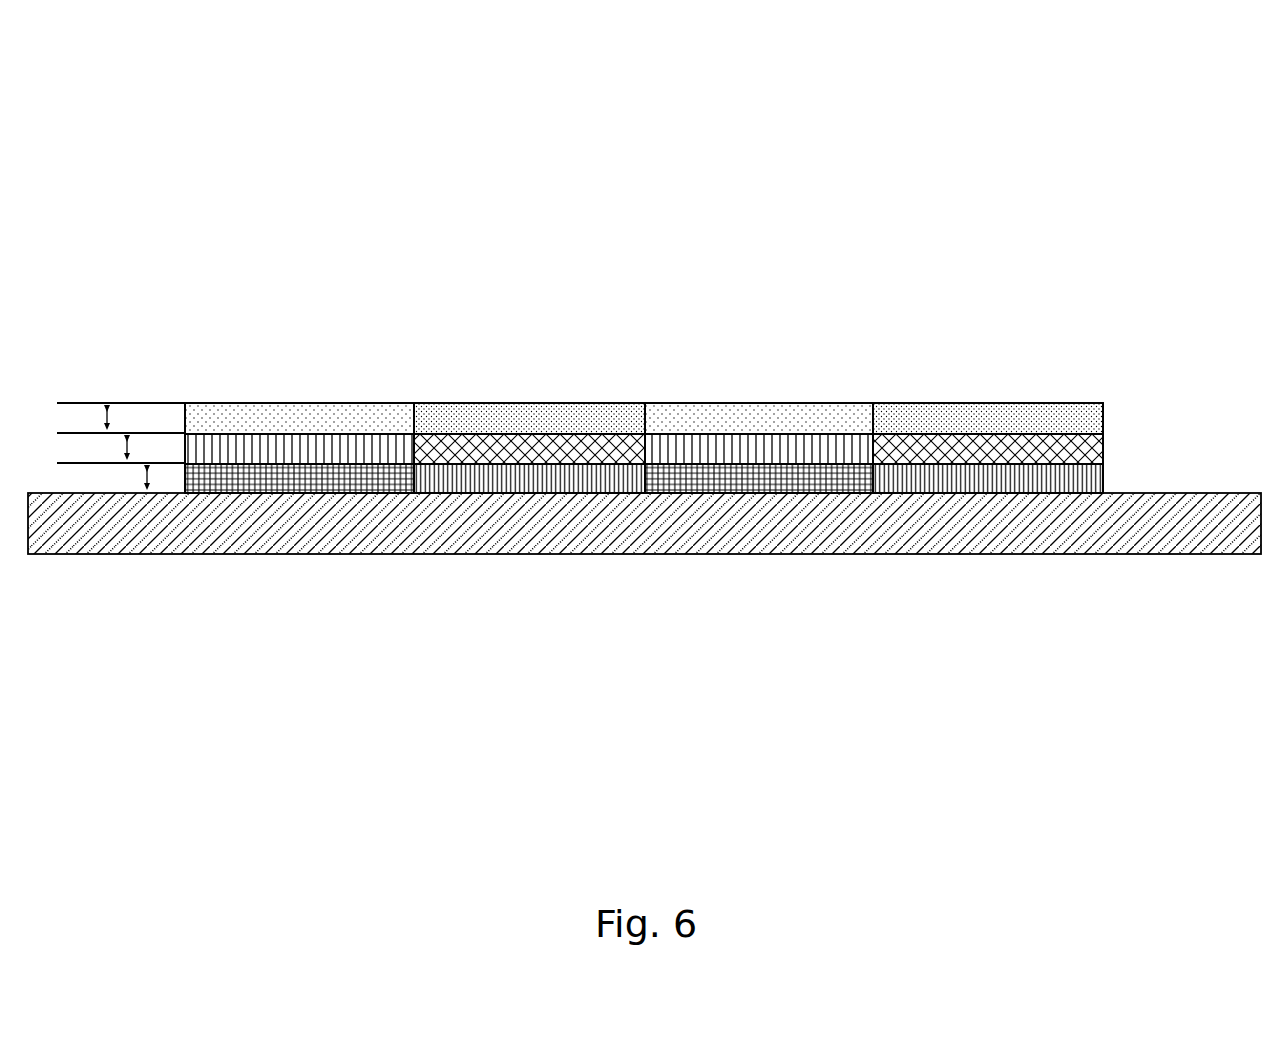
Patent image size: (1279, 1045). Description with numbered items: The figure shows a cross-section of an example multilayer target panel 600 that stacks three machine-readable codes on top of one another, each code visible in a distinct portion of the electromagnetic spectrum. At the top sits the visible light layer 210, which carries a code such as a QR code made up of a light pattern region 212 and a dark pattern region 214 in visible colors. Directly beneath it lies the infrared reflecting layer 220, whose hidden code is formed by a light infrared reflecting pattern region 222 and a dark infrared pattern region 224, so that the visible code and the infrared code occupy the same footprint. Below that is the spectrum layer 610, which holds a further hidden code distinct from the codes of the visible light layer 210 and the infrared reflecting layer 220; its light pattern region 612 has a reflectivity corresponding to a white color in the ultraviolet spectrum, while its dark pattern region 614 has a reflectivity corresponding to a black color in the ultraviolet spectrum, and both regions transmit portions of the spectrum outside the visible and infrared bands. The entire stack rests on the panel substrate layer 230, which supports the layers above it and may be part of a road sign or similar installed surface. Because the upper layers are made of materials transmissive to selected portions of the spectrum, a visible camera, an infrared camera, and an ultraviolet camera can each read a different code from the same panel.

The multilayer target panel 600 is at (1276, 46).
The visible light layer 210 is at (117, 418).
The infrared reflecting layer 220 is at (135, 450).
The spectrum layer 610 is at (138, 480).
The light pattern region 212 is at (298, 402).
The dark pattern region 214 is at (528, 402).
The light infrared reflecting pattern region 222 is at (365, 433).
The dark infrared pattern region 224 is at (587, 432).
The light pattern region 612 is at (318, 480).
The dark pattern region 614 is at (538, 480).
The panel substrate layer 230 is at (1145, 493).